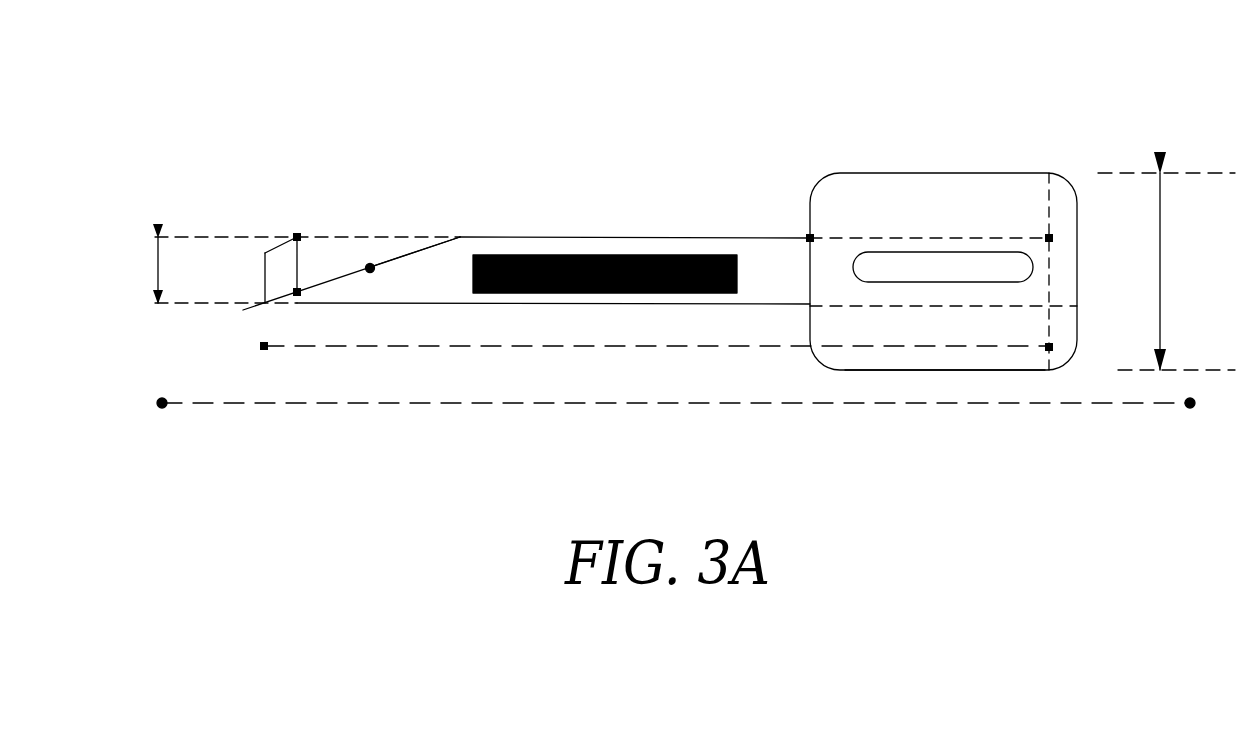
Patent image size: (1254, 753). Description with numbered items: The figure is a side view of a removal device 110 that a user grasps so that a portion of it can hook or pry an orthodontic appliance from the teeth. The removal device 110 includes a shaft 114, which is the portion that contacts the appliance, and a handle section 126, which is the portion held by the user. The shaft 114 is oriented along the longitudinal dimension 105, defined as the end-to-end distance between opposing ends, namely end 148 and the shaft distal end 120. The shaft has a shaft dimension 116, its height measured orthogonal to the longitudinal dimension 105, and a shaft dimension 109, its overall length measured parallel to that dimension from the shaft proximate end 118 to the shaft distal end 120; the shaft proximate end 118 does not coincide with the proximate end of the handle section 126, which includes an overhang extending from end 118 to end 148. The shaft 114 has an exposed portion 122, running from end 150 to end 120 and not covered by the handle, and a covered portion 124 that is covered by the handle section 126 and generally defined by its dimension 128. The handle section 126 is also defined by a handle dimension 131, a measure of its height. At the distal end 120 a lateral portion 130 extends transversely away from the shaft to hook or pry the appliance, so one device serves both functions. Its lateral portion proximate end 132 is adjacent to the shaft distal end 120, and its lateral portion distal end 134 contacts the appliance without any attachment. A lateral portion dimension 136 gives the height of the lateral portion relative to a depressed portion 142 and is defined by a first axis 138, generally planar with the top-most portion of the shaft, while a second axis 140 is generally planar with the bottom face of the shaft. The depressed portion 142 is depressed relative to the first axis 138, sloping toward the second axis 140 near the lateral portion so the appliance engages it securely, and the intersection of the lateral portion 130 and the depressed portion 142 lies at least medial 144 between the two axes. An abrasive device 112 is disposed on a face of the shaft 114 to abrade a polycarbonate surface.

The longitudinal dimension 105 is at (408, 405).
The shaft dimension 109 is at (337, 347).
The removal device 110 is at (698, 172).
The abrasive device 112 is at (525, 278).
The shaft 114 is at (963, 267).
The shaft dimension 116 is at (153, 272).
The shaft proximate end 118 is at (1054, 272).
The shaft distal end 120 is at (272, 228).
The exposed portion 122 is at (577, 200).
The covered portion 124 is at (948, 228).
The handle section 126 is at (1015, 162).
The dimension of the handle section 128 is at (828, 238).
The lateral portion 130 is at (263, 262).
The handle dimension 131 is at (1158, 247).
The lateral portion proximate end 132 is at (252, 302).
The lateral portion distal end 134 is at (292, 230).
The lateral portion dimension 136 is at (301, 290).
The first axis 138 is at (182, 237).
The second axis 140 is at (188, 306).
The depressed portion 142 is at (391, 268).
The medial 144 is at (375, 264).
The end 148 is at (1088, 174).
The end 150 is at (833, 375).